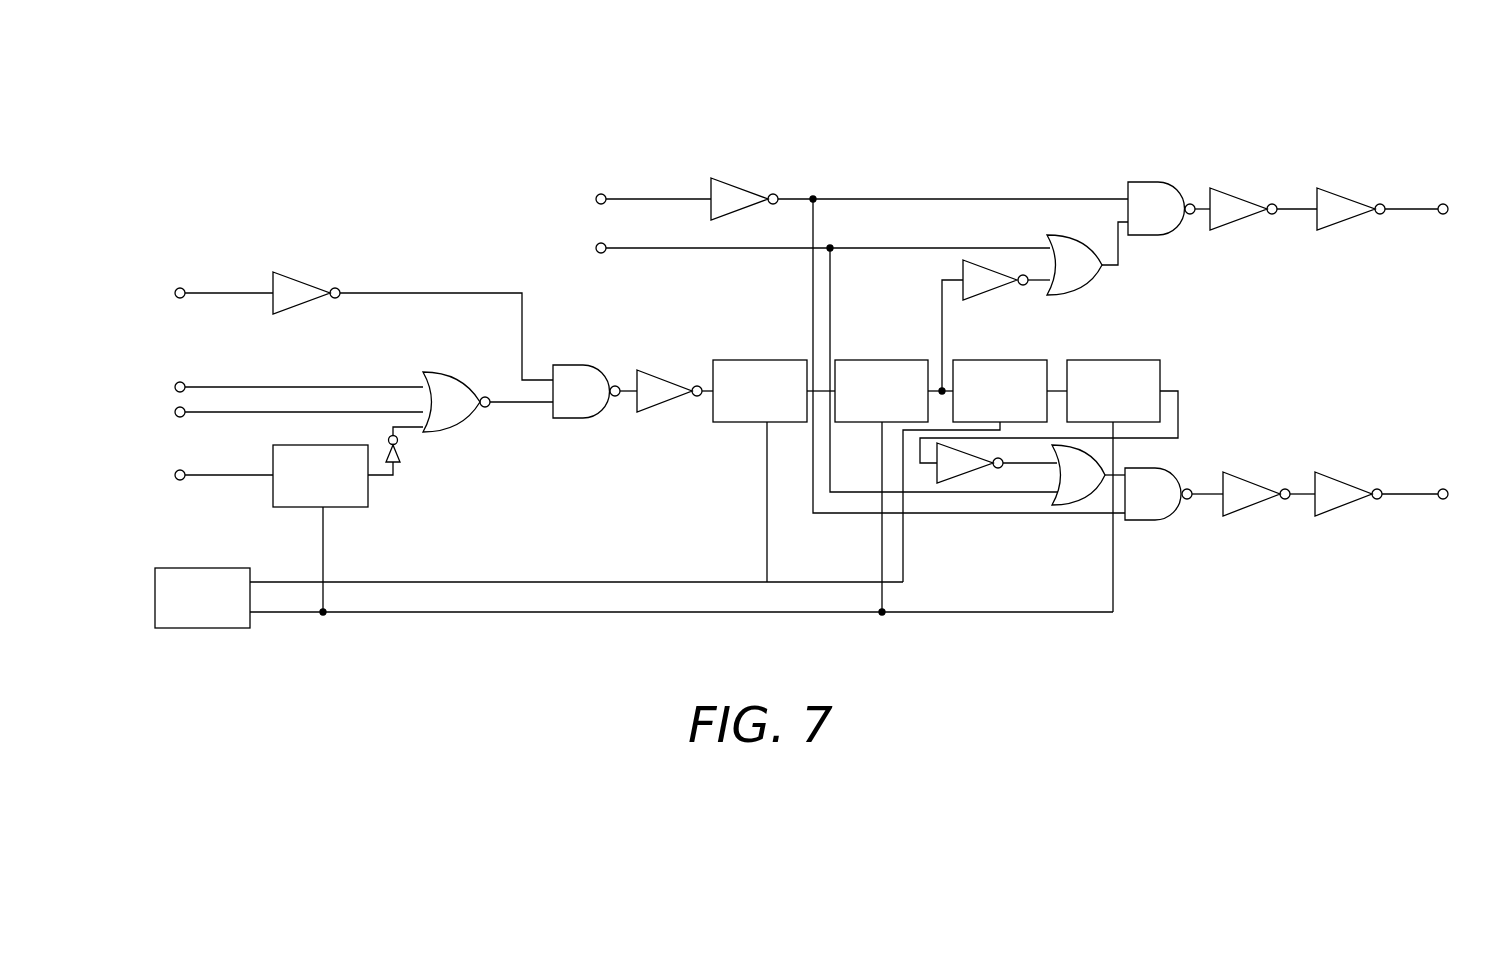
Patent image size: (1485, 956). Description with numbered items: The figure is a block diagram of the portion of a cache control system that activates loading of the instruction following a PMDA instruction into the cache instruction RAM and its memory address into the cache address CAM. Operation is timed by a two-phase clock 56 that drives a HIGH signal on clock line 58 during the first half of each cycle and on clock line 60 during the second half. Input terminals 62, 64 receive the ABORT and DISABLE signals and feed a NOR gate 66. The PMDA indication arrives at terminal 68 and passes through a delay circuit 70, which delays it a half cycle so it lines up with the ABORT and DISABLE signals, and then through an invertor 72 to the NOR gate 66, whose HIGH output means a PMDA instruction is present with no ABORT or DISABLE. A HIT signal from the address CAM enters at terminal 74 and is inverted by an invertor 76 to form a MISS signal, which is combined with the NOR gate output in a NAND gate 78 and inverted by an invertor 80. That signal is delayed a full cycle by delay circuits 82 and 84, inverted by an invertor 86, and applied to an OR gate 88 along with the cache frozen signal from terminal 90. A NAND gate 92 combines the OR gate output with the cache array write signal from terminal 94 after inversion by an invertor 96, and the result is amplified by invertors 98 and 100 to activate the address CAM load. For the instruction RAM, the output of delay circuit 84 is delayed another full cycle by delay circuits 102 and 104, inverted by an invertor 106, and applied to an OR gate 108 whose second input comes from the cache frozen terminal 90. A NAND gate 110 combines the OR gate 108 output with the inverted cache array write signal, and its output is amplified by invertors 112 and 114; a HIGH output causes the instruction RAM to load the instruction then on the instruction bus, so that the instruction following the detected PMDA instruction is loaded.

The two-phase clock 56 is at (195, 630).
The clock line 58 is at (397, 580).
The clock line 60 is at (445, 614).
The input terminal 62 is at (180, 382).
The input terminal 64 is at (180, 417).
The NOR gate 66 is at (452, 382).
The terminal 68 is at (180, 487).
The delay circuit 70 is at (370, 493).
The invertor 72 is at (400, 450).
The terminal 74 is at (178, 288).
The invertor 76 is at (298, 270).
The NAND gate 78 is at (575, 363).
The invertor 80 is at (667, 377).
The delay circuit 82 is at (763, 358).
The delay circuit 84 is at (880, 358).
The invertor 86 is at (965, 262).
The OR gate 88 is at (1095, 283).
The terminal 90 is at (600, 253).
The NAND gate 92 is at (1165, 182).
The terminal 94 is at (600, 195).
The invertor 96 is at (743, 188).
The invertor 98 is at (1243, 197).
The invertor 100 is at (1348, 197).
The delay circuit 102 is at (998, 358).
The delay circuit 104 is at (1140, 358).
The invertor 106 is at (965, 480).
The OR gate 108 is at (1083, 500).
The NAND gate 110 is at (1173, 520).
The invertor 112 is at (1242, 508).
The invertor 114 is at (1347, 470).